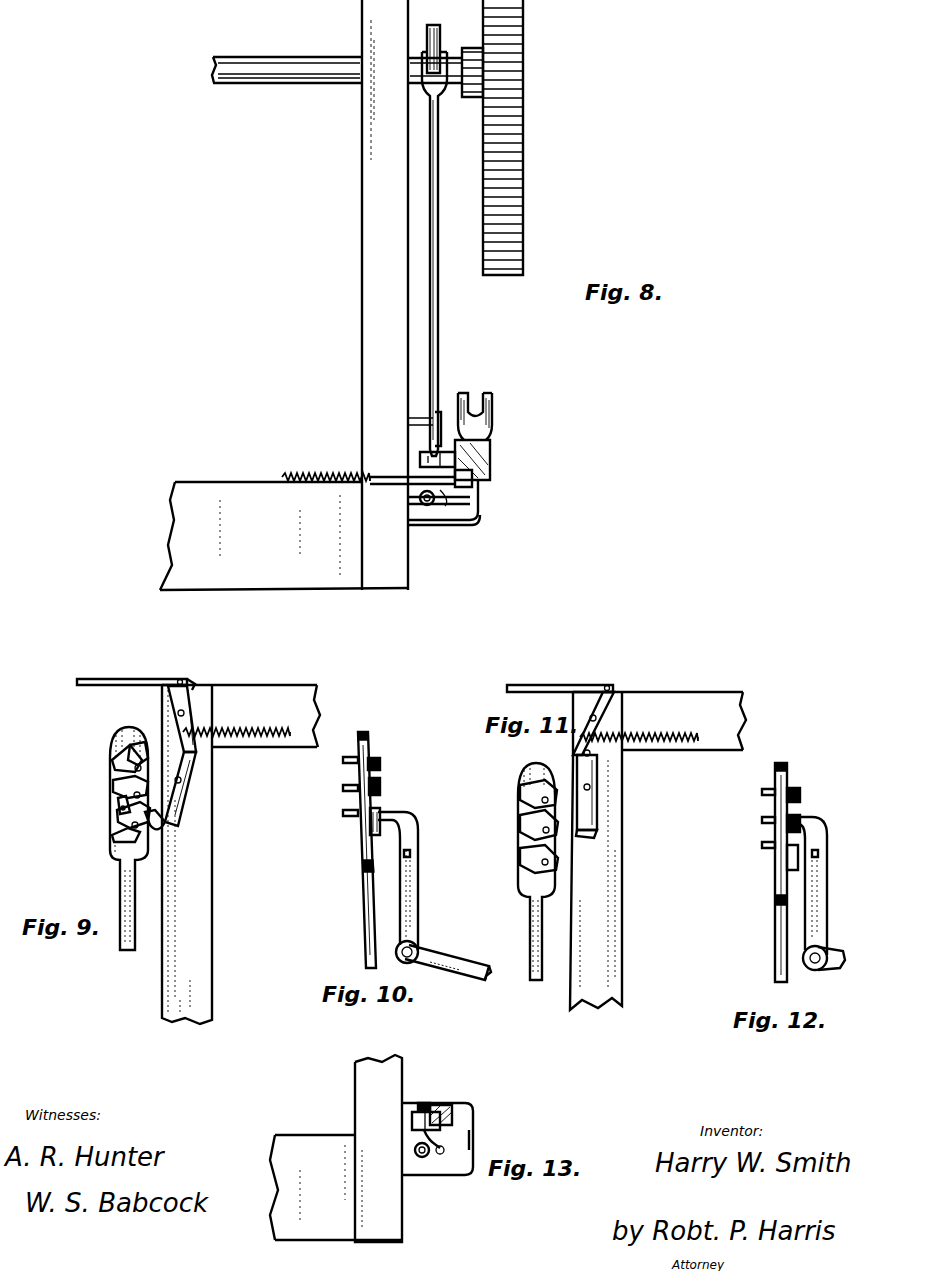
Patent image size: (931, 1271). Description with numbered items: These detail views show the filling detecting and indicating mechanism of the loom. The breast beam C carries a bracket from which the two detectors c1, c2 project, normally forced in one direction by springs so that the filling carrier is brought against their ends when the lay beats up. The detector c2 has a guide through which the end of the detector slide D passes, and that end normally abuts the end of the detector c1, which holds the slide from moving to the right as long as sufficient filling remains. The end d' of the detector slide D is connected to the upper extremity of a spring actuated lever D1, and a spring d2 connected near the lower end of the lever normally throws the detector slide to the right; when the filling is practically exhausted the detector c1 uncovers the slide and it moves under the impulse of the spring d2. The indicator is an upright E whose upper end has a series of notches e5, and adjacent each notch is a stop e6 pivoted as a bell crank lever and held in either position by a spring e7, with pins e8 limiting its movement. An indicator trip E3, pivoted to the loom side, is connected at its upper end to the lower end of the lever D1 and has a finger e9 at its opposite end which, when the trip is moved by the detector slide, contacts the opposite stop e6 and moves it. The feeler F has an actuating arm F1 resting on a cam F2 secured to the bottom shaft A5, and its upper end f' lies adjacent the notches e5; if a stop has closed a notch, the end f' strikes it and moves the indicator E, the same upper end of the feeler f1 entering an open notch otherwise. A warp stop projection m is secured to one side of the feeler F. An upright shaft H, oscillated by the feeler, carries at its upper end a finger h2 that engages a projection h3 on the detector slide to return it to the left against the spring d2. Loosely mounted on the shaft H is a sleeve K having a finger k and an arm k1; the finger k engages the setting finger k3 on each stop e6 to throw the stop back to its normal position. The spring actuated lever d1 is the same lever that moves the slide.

In FIG. 8, the bottom shaft A5 is at (292, 68).
In FIG. 8, the cam F2 is at (440, 40).
In FIG. 8, the actuating arm F1 is at (437, 250).
In FIG. 10, the actuating arm F1 is at (460, 966).
In FIG. 8, the detector c2 is at (460, 392).
In FIG. 8, the detector c1 is at (492, 398).
In FIG. 8, the upper end of feeler f1 is at (433, 440).
In FIG. 12, the upper end of feeler f1 is at (808, 817).
In FIG. 8, the finger h2 is at (420, 458).
In FIG. 8, the projection h3 is at (420, 476).
In FIG. 8, the spring actuated lever d1 is at (312, 470).
In FIG. 8, the detector slide D is at (395, 488).
In FIG. 9, the detector slide D is at (147, 680).
In FIG. 8, the breast beam C is at (284, 536).
In FIG. 13, the breast beam C is at (336, 1187).
In FIG. 8, the upright shaft H is at (428, 506).
In FIG. 13, the upright shaft H is at (422, 1158).
In FIG. 9, the end of detector slide d' is at (193, 663).
In FIG. 11, the end of detector slide d' is at (625, 672).
In FIG. 9, the spring actuated lever D1 is at (196, 688).
In FIG. 9, the spring d2 is at (237, 735).
In FIG. 11, the spring d2 is at (650, 735).
In FIG. 9, the indicator trip E3 is at (178, 796).
In FIG. 11, the indicator trip E3 is at (592, 800).
In FIG. 9, the finger e9 is at (166, 820).
In FIG. 11, the finger e9 is at (588, 836).
In FIG. 9, the upright E is at (126, 884).
In FIG. 10, the upright E is at (368, 925).
In FIG. 11, the upright E is at (532, 910).
In FIG. 12, the upright E is at (775, 945).
In FIG. 9, the notches e5 is at (112, 762).
In FIG. 9, the stop e6 is at (150, 825).
In FIG. 10, the stop e6 is at (372, 822).
In FIG. 11, the stop e6 is at (522, 852).
In FIG. 12, the stop e6 is at (798, 792).
In FIG. 13, the stop e6 is at (448, 1105).
In FIG. 9, the spring e7 is at (125, 840).
In FIG. 10, the spring e7 is at (378, 762).
In FIG. 13, the spring e7 is at (424, 1103).
In FIG. 9, the pins e8 is at (120, 812).
In FIG. 10, the setting finger k3 is at (343, 813).
In FIG. 12, the setting finger k3 is at (762, 845).
In FIG. 13, the setting finger k3 is at (412, 1118).
In FIG. 10, the upper end of feeler f' is at (399, 810).
In FIG. 10, the feeler F is at (415, 912).
In FIG. 12, the feeler F is at (826, 910).
In FIG. 10, the warp stop projection m is at (410, 854).
In FIG. 12, the warp stop projection m is at (818, 853).
In FIG. 11, the post A is at (612, 905).
In FIG. 13, the sleeve K is at (440, 1160).
In FIG. 13, the finger k is at (450, 1130).
In FIG. 13, the arm k1 is at (446, 1148).